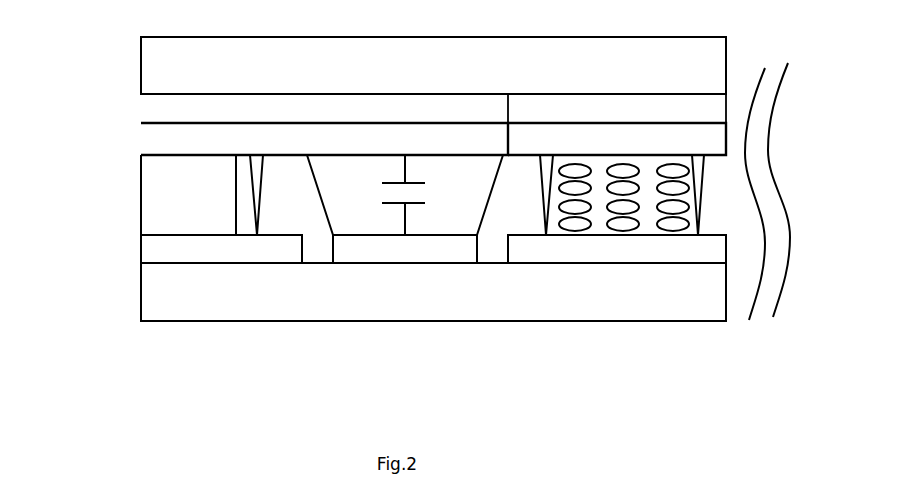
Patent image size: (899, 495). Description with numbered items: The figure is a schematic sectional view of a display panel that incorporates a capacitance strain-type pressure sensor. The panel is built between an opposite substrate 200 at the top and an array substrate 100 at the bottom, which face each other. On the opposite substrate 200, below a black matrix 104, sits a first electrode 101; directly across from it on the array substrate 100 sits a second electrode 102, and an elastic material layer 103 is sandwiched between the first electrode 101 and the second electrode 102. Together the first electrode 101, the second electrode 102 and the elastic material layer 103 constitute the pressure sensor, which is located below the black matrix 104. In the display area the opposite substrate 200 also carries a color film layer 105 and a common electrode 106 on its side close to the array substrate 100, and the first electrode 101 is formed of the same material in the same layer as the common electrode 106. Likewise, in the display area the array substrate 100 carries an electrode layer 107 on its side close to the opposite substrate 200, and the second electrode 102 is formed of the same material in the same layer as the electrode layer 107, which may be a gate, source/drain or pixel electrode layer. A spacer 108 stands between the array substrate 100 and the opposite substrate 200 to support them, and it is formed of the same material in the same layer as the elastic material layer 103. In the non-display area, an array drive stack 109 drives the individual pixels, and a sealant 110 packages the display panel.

The opposite substrate 200 is at (433, 65).
The black matrix 104 is at (324, 108).
The color film layer 105 is at (617, 108).
The first electrode 101 is at (324, 139).
The common electrode 106 is at (617, 139).
The sealant 110 is at (188, 195).
The spacer 108 is at (250, 178).
The array drive stack 109 is at (221, 249).
The elastic material layer 103 is at (349, 209).
The second electrode 102 is at (405, 249).
The electrode layer 107 is at (617, 249).
The array substrate 100 is at (433, 292).